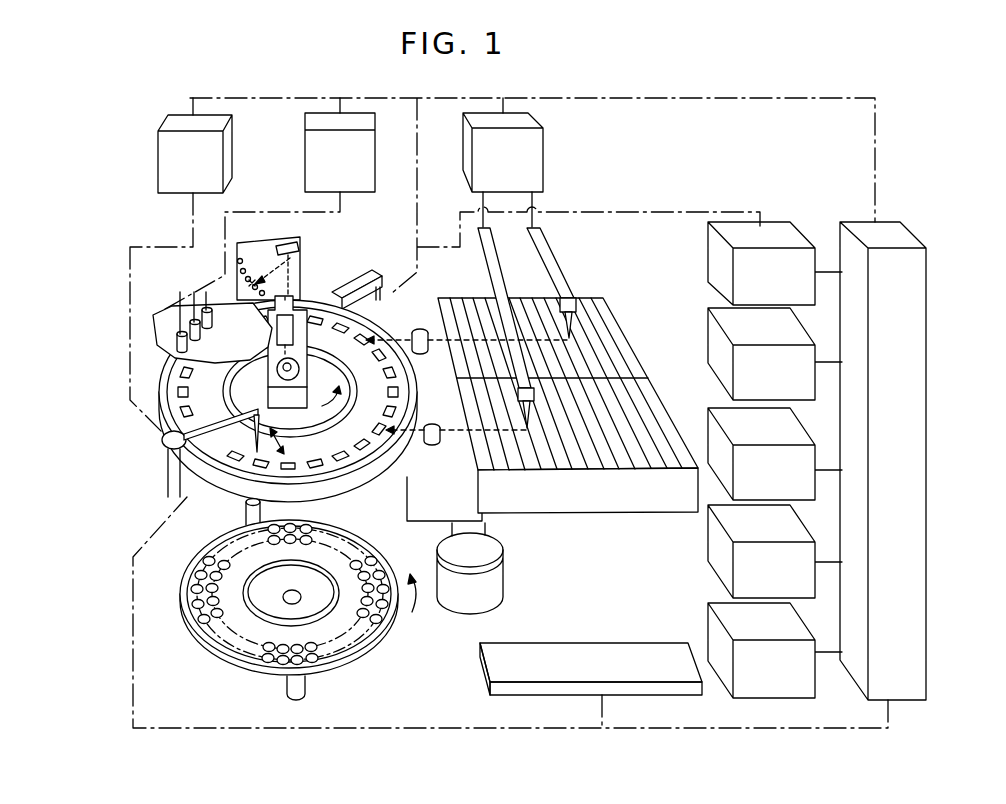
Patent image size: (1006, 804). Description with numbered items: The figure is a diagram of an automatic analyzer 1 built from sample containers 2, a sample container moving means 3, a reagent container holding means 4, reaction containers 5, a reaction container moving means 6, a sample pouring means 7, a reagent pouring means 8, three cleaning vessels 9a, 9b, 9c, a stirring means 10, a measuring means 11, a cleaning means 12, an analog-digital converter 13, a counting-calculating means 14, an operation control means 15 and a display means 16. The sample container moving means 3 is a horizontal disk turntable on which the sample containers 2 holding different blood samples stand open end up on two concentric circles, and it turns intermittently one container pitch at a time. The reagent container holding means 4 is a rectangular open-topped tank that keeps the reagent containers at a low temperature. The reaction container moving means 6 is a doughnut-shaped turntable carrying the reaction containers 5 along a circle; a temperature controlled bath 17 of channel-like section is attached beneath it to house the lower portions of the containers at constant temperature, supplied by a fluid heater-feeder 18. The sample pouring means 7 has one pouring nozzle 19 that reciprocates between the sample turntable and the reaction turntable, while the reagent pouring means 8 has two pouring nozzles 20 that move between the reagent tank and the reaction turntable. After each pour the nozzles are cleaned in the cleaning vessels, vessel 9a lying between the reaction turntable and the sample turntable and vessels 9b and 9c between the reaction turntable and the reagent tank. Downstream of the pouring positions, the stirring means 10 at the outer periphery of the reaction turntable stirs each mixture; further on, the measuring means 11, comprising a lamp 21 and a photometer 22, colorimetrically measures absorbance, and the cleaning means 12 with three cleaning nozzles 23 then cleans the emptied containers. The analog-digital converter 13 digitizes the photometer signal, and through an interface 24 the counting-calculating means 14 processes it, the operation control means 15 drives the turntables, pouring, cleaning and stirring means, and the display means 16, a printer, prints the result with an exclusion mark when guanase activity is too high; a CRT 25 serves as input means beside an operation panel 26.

The automatic analyzer 1 is at (603, 93).
The sample containers 2 is at (333, 660).
The sample container moving means 3 is at (243, 665).
The reagent container holding means 4 is at (614, 505).
The reaction containers 5 is at (163, 440).
The reaction container moving means 6 is at (168, 402).
The sample pouring means 7 is at (158, 160).
The reagent pouring means 8 is at (535, 158).
The cleaning vessel 9a is at (212, 535).
The cleaning vessel 9b is at (419, 328).
The cleaning vessel 9c is at (434, 445).
The stirring means 10 is at (353, 276).
The measuring means 11 is at (266, 238).
The cleaning means 12 is at (358, 147).
The analog-digital converter 13 is at (781, 230).
The counting-calculating means 14 is at (792, 335).
The operation control means 15 is at (792, 433).
The display means 16 is at (792, 530).
The temperature controlled bath 17 is at (233, 492).
The fluid heater-feeder 18 is at (500, 588).
The pouring nozzle 19 is at (252, 440).
The pouring nozzles 20 is at (572, 336).
The lamp 21 is at (280, 372).
The photometer 22 is at (240, 247).
The cleaning nozzles 23 is at (186, 284).
The interface 24 is at (905, 380).
The CRT 25 is at (800, 686).
The operation panel 26 is at (640, 667).